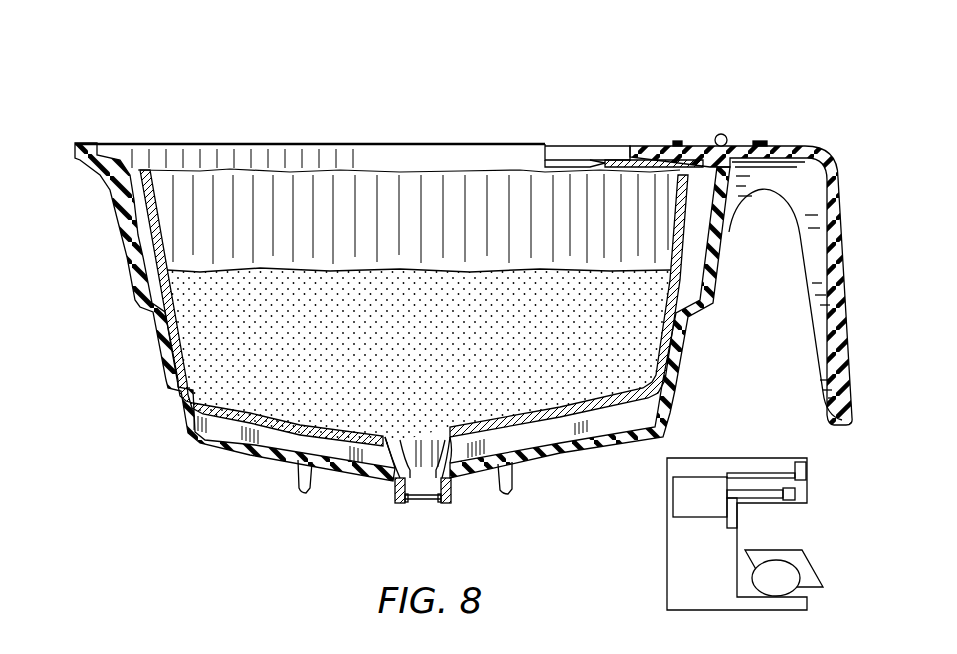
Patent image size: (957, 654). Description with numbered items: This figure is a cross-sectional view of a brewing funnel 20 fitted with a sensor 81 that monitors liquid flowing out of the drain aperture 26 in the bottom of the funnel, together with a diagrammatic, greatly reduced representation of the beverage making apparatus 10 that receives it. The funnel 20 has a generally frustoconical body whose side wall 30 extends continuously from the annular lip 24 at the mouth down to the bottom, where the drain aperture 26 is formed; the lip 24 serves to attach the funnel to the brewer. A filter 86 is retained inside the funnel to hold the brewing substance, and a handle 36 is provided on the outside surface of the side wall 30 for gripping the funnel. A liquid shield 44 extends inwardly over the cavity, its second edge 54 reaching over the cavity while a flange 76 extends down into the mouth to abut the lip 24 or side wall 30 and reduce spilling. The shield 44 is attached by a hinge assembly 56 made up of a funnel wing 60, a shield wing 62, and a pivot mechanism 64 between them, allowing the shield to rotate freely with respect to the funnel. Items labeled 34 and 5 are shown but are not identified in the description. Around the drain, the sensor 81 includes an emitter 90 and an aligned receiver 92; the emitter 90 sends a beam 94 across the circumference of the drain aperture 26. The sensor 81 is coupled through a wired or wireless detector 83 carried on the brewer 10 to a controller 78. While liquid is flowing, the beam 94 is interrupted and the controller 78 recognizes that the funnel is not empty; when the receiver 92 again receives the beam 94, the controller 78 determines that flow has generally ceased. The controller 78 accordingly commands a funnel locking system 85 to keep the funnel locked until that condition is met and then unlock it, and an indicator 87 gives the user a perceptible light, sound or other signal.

The beverage funnel 20 is at (377, 86).
The lid 34 is at (512, 1).
The annular lip 24 is at (75, 143).
The side wall 30 is at (146, 186).
The filter 86 is at (265, 195).
The liquid shield 44 is at (586, 130).
The second edge 54 is at (630, 156).
The shield wing 62 is at (693, 142).
The pivot mechanism 64 is at (719, 133).
The hinge assembly 56 is at (727, 116).
The funnel wing 60 is at (757, 136).
The handle 36 is at (836, 170).
The flange 76 is at (733, 194).
The sensor 81 is at (381, 482).
The drain aperture 26 is at (430, 497).
The emitter 90 is at (399, 508).
The receiver 92 is at (451, 488).
The beam 94 is at (420, 504).
The beverage making apparatus 10 is at (667, 497).
The controller 78 is at (688, 475).
The indicator 87 is at (799, 460).
The funnel locking system 85 is at (794, 499).
The detector 83 is at (738, 517).
The drive motor 5 is at (667, 568).